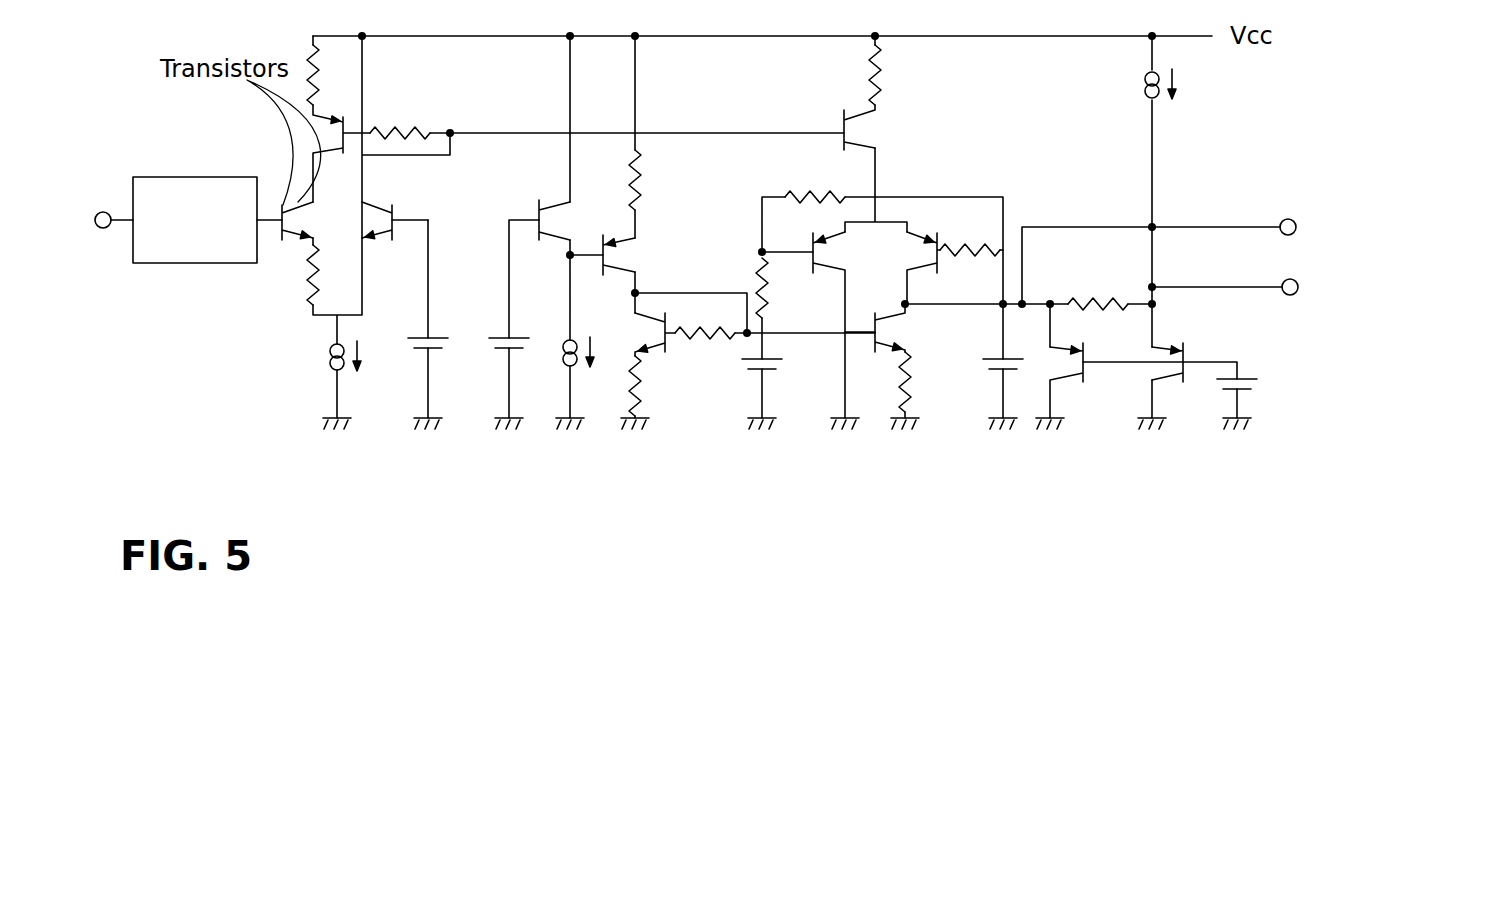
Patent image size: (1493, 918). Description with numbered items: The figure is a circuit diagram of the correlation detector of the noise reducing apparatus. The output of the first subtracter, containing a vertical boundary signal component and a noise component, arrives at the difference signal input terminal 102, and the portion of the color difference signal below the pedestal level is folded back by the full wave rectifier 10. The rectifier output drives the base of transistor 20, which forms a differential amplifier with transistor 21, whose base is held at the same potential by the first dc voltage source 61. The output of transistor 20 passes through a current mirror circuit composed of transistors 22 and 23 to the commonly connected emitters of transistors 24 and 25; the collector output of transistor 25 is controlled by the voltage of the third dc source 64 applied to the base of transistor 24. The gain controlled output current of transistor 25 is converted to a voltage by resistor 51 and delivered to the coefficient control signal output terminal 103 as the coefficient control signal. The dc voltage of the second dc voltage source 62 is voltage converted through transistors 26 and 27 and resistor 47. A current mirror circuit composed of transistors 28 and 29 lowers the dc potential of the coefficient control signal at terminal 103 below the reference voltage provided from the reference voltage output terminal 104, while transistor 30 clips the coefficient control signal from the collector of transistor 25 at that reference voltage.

The full wave rectifier 10 is at (174, 177).
The transistor 20 is at (287, 205).
The transistor 21 is at (537, 205).
The transistor 22 is at (338, 115).
The transistor 23 is at (860, 138).
The transistor 24 is at (828, 272).
The transistor 25 is at (915, 237).
The transistor 26 is at (552, 205).
The transistor 27 is at (617, 262).
The transistor 28 is at (633, 315).
The transistor 29 is at (900, 318).
The transistor 30 is at (1070, 375).
The resistor 47 is at (648, 160).
The resistor 51 is at (1096, 303).
The first dc voltage source 61 is at (420, 348).
The second dc voltage source 62 is at (493, 352).
The third dc source 64 is at (753, 370).
The difference signal input terminal 102 is at (104, 228).
The coefficient control signal output terminal 103 is at (1302, 220).
The reference voltage output terminal 104 is at (1297, 293).